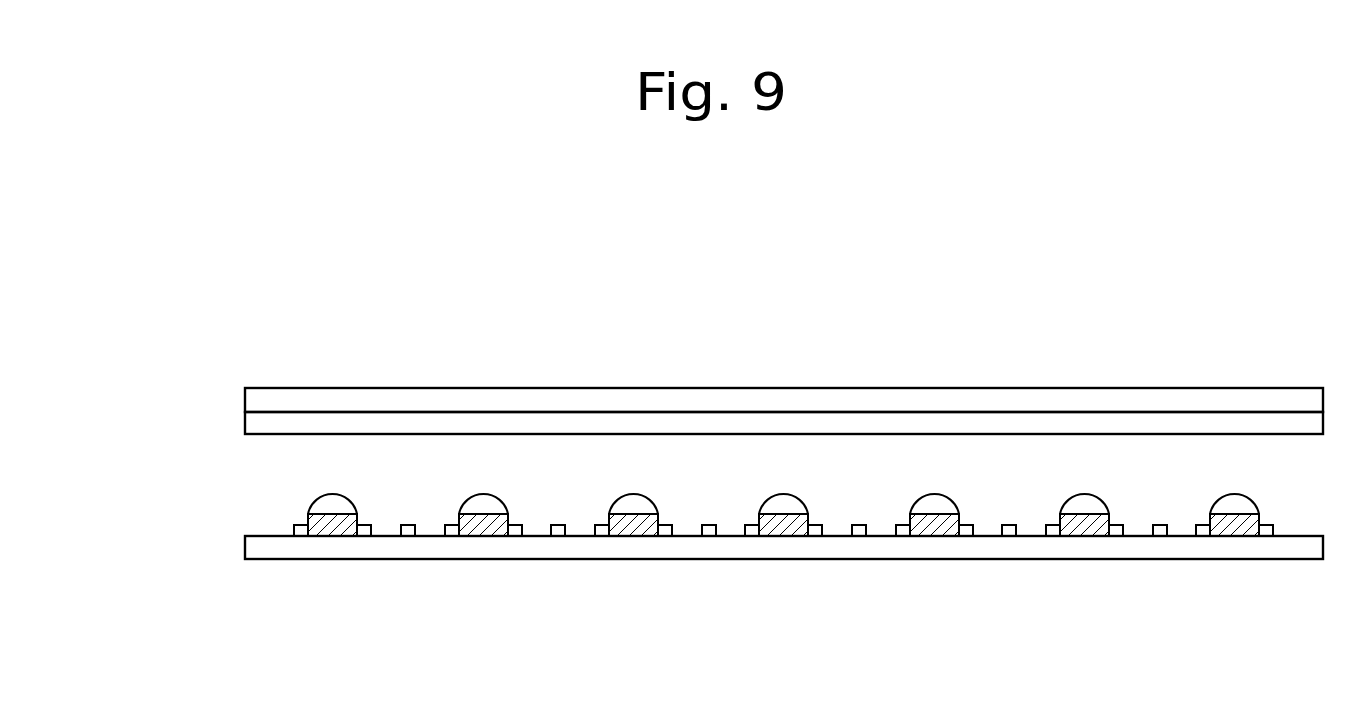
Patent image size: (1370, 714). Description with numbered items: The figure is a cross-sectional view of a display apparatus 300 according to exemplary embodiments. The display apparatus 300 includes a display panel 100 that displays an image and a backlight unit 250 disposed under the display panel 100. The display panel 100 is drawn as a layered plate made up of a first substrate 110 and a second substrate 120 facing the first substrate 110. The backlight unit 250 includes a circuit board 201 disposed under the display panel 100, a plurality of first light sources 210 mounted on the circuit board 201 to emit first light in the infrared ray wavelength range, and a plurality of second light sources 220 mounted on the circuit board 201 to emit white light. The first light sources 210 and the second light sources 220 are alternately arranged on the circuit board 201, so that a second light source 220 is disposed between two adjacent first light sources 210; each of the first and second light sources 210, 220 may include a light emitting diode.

The display apparatus 300 is at (1187, 320).
The display panel 100 is at (162, 387).
The second substrate 120 is at (246, 396).
The first substrate 110 is at (246, 424).
The backlight unit 250 is at (217, 495).
The circuit board 201 is at (860, 552).
The second light source 220 is at (332, 533).
The first light source 210 is at (407, 537).